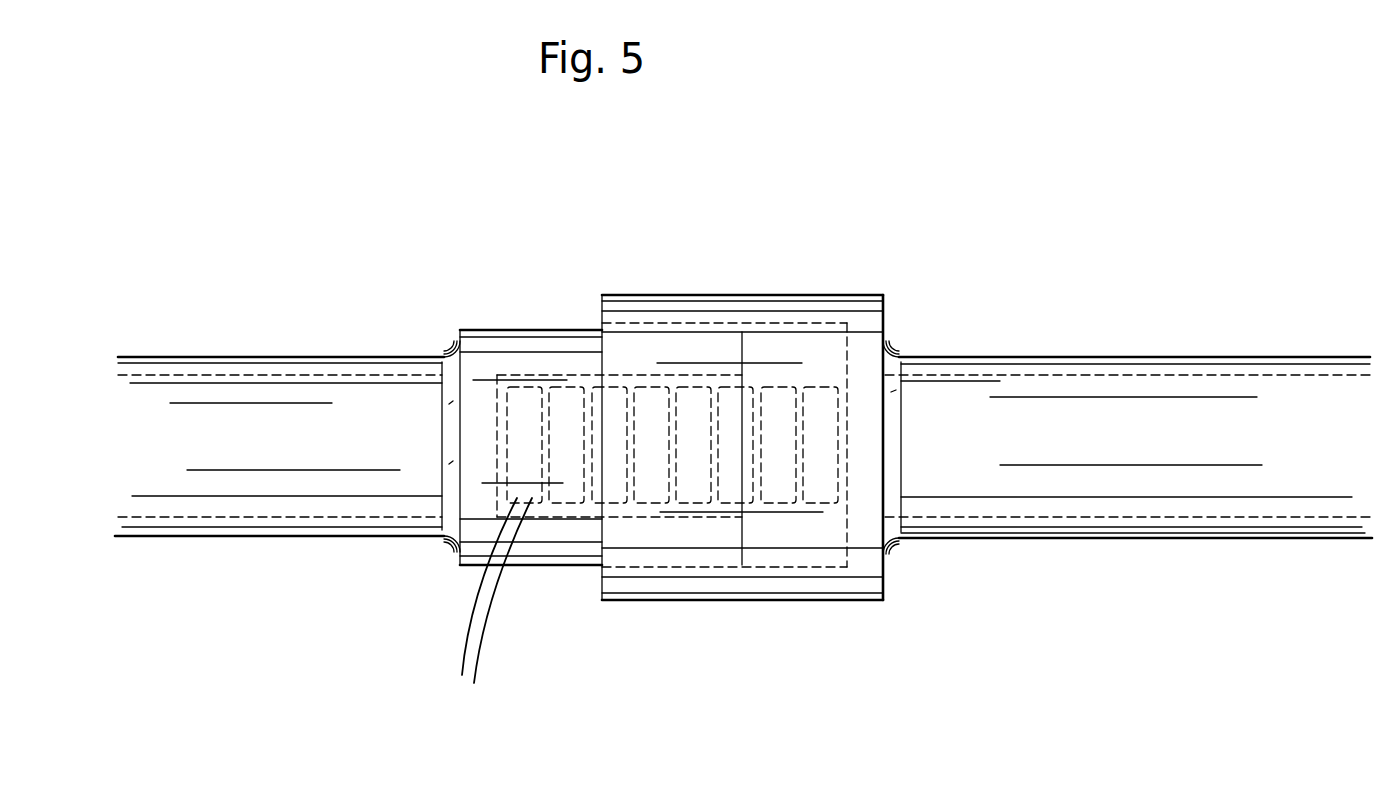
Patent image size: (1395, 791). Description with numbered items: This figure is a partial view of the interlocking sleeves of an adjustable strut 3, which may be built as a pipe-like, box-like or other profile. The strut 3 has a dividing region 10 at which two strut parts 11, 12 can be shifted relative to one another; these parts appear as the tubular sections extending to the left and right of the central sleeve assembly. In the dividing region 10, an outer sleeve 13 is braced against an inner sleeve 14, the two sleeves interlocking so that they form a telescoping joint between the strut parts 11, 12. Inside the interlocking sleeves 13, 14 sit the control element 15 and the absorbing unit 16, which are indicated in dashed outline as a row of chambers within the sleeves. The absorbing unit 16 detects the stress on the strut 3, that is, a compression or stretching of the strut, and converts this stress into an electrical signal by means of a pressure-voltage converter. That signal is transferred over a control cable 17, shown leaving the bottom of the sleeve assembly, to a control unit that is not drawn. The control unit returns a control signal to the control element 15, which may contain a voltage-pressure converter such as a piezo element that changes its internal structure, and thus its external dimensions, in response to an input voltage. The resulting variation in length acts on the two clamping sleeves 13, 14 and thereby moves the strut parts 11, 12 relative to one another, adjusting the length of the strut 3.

The strut 3 is at (908, 282).
The dividing region 10 is at (598, 327).
The strut part 11 is at (227, 460).
The strut part 12 is at (1125, 450).
The outer sleeve 13 is at (741, 583).
The inner sleeve 14 is at (573, 548).
The control element 15 is at (778, 408).
The absorbing unit 16 is at (615, 407).
The control cable 17 is at (462, 672).